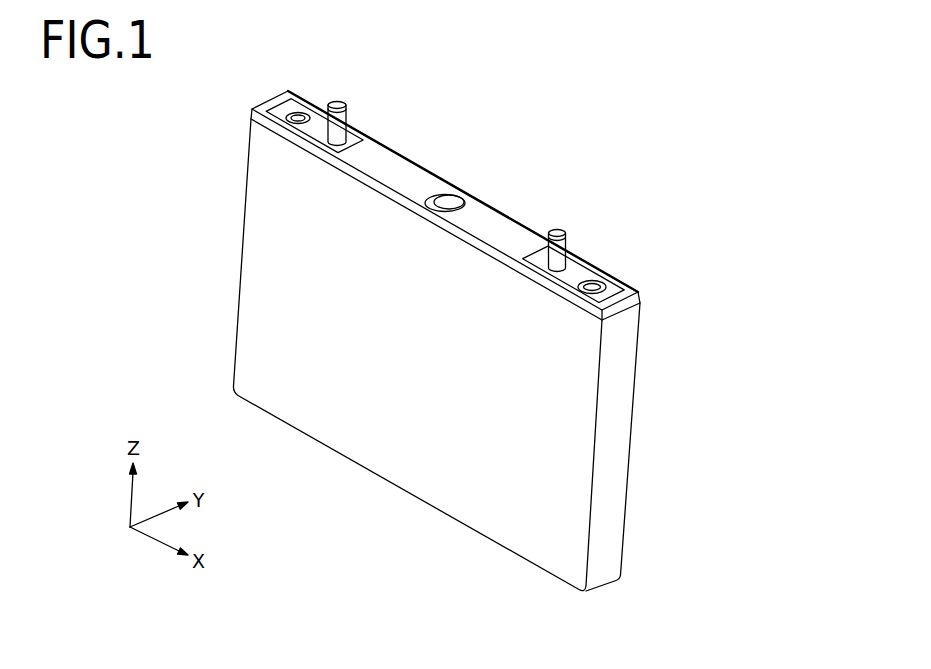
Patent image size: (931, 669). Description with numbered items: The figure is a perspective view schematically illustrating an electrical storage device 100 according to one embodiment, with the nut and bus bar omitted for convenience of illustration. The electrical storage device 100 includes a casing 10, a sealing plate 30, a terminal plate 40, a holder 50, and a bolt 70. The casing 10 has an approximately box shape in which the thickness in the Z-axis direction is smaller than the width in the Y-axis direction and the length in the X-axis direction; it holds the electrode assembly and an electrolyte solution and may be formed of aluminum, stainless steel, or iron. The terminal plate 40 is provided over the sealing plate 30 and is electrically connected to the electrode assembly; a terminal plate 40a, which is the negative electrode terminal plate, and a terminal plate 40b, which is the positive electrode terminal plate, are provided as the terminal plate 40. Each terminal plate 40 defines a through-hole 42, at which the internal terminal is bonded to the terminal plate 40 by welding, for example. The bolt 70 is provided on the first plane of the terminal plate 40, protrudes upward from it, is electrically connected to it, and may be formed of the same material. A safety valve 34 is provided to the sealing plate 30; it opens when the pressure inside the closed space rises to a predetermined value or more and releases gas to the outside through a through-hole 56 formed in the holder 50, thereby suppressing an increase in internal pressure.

The electrical storage device 100 is at (700, 118).
The casing 10 is at (270, 268).
The holder 50 is at (503, 230).
The terminal plate 40 is at (446, 167).
The terminal plate 40a is at (253, 108).
The terminal plate 40b is at (620, 289).
The through-hole 42 is at (299, 112).
The bolt 70 is at (338, 101).
The sealing plate 30 is at (439, 153).
The safety valve 34 is at (437, 203).
The through-hole 56 is at (448, 197).